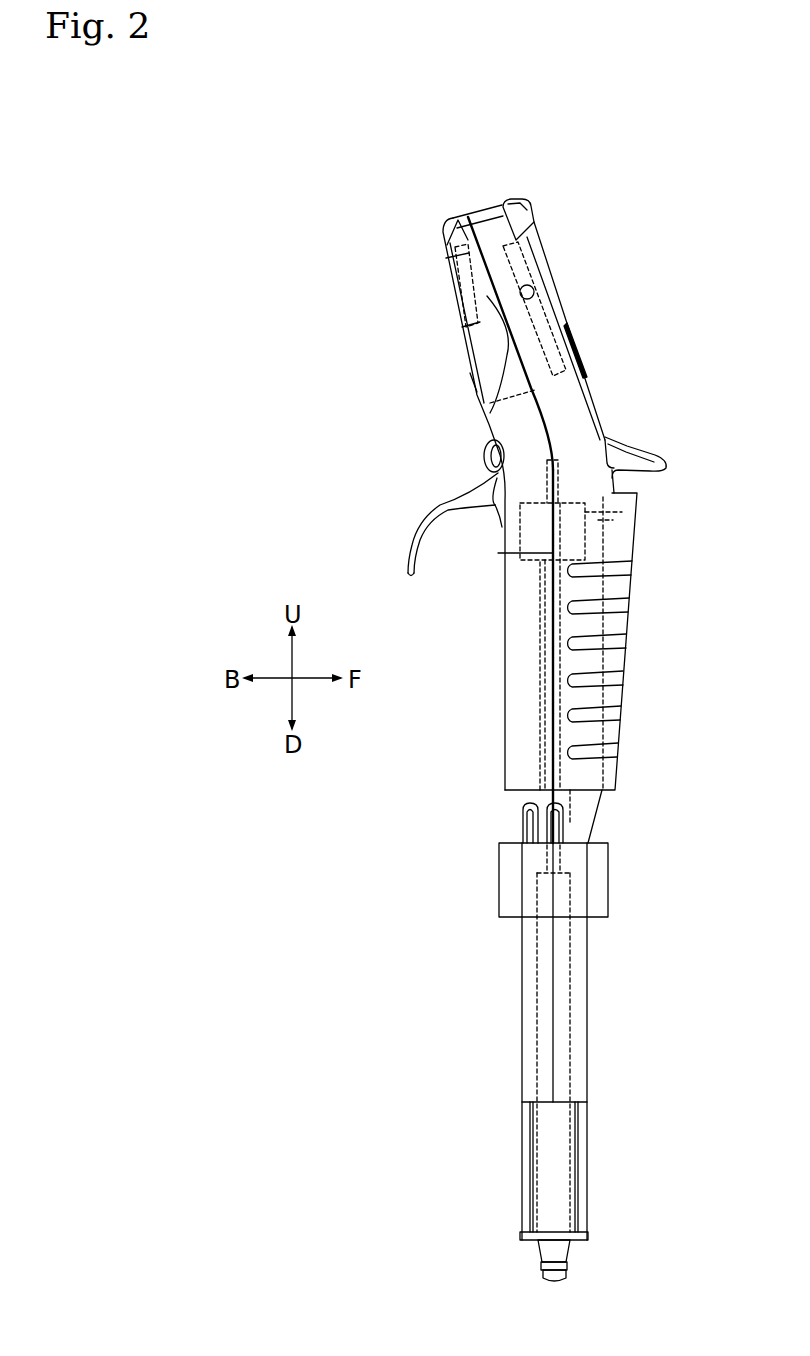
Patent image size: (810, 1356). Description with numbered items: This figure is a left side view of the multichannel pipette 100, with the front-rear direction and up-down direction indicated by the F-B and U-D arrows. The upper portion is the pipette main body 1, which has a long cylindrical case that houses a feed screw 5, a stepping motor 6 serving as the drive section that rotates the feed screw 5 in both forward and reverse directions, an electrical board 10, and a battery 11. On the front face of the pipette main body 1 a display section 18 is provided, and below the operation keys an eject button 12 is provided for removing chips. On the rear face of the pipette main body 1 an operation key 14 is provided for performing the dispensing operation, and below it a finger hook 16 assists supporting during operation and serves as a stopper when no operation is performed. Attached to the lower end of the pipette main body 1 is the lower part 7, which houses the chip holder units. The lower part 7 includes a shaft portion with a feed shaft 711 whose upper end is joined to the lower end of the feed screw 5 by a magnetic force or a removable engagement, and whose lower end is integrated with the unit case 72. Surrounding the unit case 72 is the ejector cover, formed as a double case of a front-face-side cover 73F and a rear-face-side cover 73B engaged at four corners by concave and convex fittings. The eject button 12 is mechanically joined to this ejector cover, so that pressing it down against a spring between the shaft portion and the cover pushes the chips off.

The multichannel pipette 100 is at (588, 185).
The electrical board 10 is at (545, 250).
The battery 11 is at (450, 290).
The display section 18 is at (548, 291).
The eject button 12 is at (633, 444).
The operation key 14 is at (482, 452).
The finger hook 16 is at (417, 521).
The pipette main body 1 is at (673, 553).
The stepping motor 6 is at (498, 553).
The feed screw 5 is at (545, 640).
The lower part 7 is at (673, 853).
The feed shaft 711 is at (547, 853).
The unit case 72 is at (538, 880).
The rear-face-side cover 73B is at (525, 985).
The front-face-side cover 73F is at (587, 988).